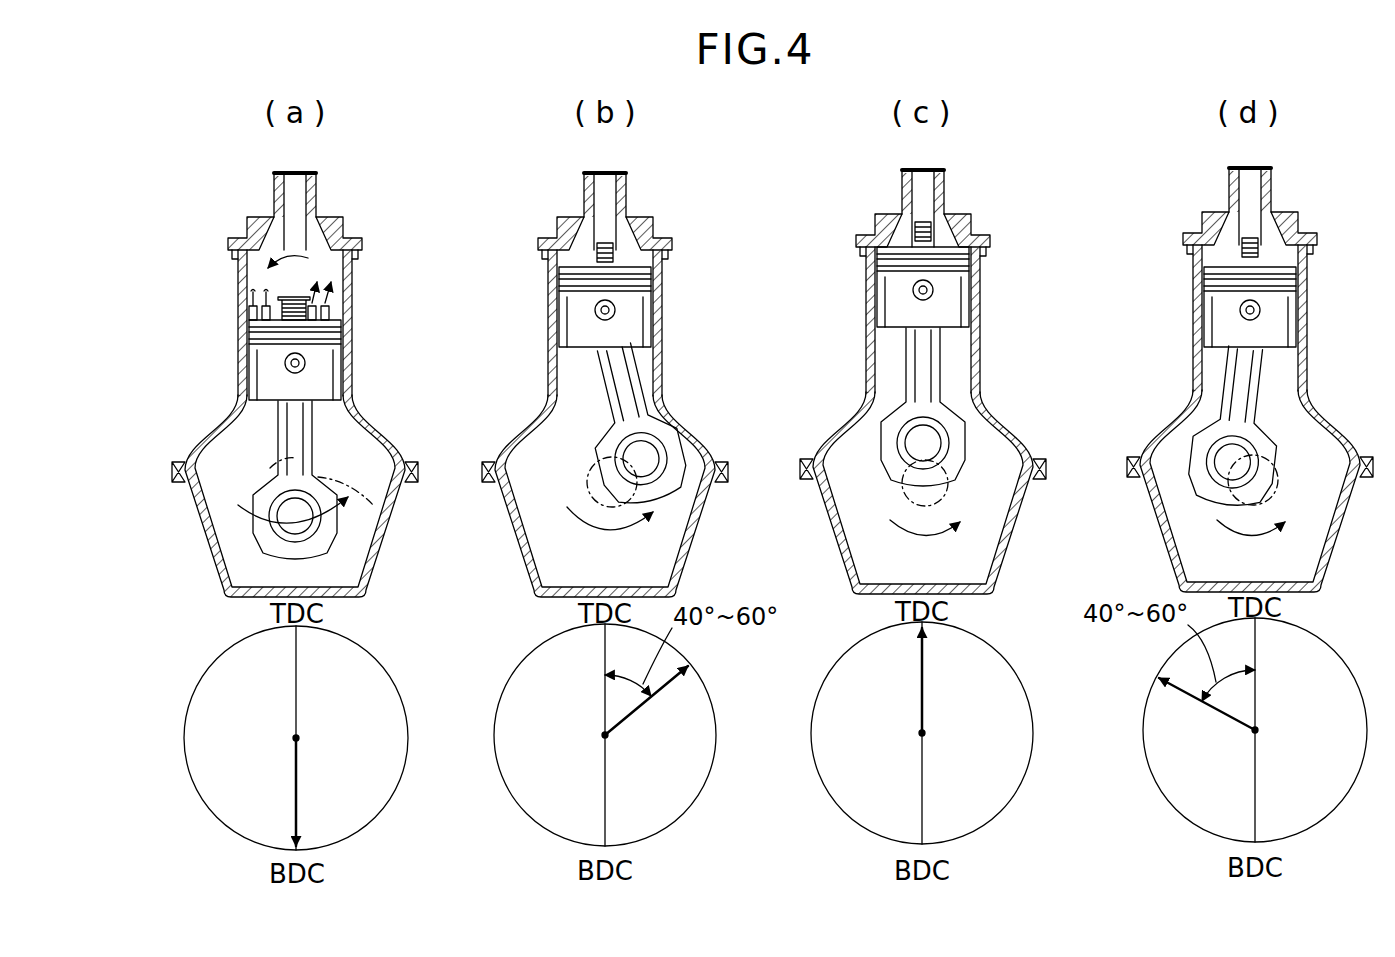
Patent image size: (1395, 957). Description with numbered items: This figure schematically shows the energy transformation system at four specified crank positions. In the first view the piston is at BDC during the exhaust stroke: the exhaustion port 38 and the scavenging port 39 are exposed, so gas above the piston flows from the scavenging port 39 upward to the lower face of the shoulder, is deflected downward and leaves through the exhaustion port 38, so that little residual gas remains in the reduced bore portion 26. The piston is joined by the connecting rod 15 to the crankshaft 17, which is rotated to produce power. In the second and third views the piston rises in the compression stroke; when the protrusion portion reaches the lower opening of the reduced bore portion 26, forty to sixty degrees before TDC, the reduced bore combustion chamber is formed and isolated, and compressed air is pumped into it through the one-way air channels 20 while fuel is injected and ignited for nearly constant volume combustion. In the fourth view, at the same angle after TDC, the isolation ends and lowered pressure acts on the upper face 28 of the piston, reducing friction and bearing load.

The connecting rod 15 is at (297, 423).
The crankshaft 17 is at (394, 514).
The one-way air channels 20 is at (322, 228).
The reduced bore portion 26 is at (317, 192).
The upper face of the piston 28 is at (972, 228).
The exhaustion port 38 is at (245, 314).
The scavenging port 39 is at (345, 310).